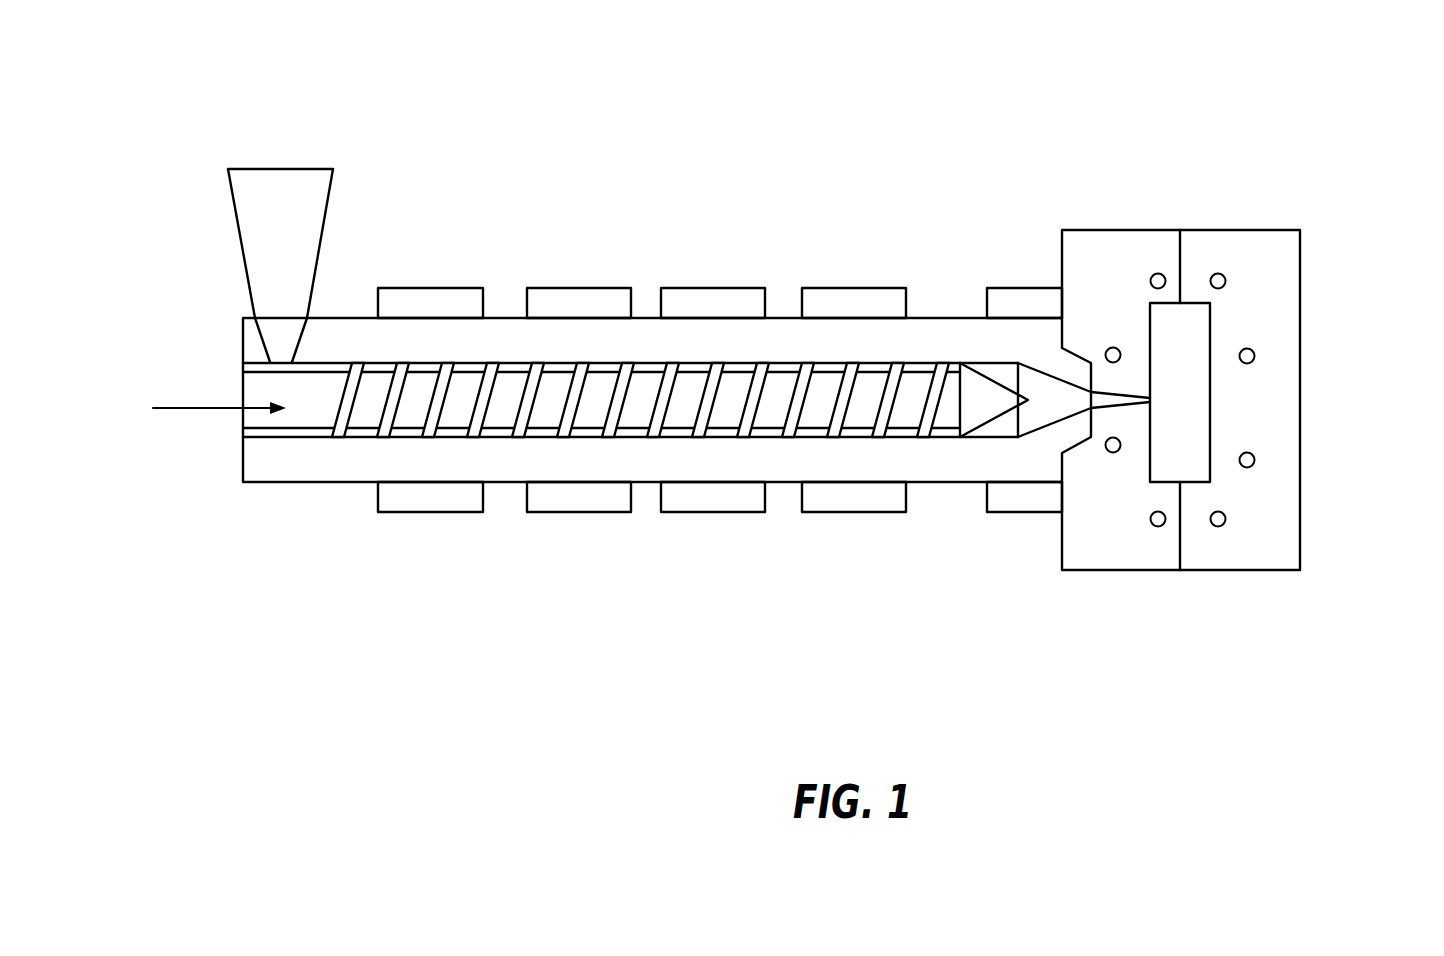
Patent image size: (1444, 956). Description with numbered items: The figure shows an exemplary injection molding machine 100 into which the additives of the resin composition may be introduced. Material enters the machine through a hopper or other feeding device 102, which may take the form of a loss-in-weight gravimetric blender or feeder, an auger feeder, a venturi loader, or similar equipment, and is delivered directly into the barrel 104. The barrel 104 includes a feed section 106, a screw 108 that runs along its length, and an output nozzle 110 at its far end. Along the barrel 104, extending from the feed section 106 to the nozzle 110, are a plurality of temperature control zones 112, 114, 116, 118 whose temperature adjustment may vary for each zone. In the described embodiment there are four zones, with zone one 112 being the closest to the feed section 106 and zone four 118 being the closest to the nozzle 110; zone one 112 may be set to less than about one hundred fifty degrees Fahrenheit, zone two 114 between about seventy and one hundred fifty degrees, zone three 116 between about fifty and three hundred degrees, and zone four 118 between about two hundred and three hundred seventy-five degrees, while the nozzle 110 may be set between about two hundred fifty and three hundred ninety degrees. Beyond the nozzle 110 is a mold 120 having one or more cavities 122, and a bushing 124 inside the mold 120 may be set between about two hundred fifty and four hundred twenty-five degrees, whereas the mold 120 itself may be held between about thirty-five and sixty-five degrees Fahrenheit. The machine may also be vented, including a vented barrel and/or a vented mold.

The injection molding machine 100 is at (538, 95).
The hopper or other feeding device 102 is at (240, 245).
The barrel 104 is at (603, 469).
The feed section 106 is at (300, 470).
The screw 108 is at (186, 407).
The output nozzle 110 is at (1047, 460).
The temperature control zone 1 112 is at (430, 288).
The temperature control zone 2 114 is at (578, 288).
The temperature control zone 3 116 is at (712, 288).
The temperature control zone 4 118 is at (853, 288).
The mold 120 is at (1300, 400).
The cavity 122 is at (1188, 453).
The bushing 124 is at (1122, 395).